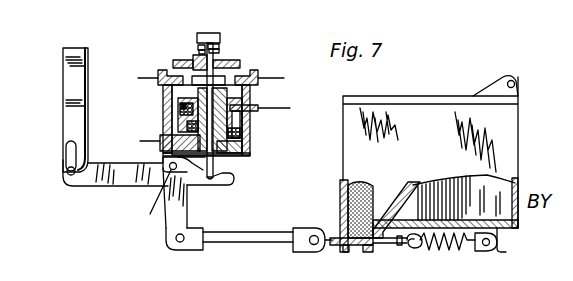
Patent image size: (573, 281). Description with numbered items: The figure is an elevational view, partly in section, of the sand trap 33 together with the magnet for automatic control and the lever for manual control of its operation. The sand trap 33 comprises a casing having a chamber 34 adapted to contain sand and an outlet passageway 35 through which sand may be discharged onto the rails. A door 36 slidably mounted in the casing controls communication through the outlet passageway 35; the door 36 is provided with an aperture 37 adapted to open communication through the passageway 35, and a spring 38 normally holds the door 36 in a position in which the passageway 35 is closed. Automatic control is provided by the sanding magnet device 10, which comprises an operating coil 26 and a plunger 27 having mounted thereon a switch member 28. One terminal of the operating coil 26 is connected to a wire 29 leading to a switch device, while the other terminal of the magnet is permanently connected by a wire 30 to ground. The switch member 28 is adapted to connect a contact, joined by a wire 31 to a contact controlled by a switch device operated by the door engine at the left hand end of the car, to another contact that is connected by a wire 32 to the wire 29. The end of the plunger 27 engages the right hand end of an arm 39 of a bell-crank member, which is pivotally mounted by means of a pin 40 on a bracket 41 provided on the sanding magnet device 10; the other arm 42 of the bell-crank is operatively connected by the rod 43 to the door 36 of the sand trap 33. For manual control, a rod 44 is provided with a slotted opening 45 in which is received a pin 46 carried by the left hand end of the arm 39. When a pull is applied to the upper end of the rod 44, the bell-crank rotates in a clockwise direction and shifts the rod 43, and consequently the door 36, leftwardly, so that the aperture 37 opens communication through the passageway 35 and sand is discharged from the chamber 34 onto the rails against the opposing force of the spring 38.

The sanding magnet device 10 is at (259, 131).
The operating coil 26 is at (182, 112).
The plunger 27 is at (211, 158).
The switch member 28 is at (197, 60).
The wire 29 is at (140, 141).
The wire 30 is at (290, 108).
The wire 31 is at (284, 78).
The wire 32 is at (138, 78).
The sand trap 33 is at (527, 137).
The chamber 34 is at (352, 186).
The outlet passageway 35 is at (355, 214).
The door 36 is at (363, 247).
The aperture 37 is at (380, 248).
The spring 38 is at (442, 251).
The arm 39 is at (118, 188).
The pin 40 is at (155, 206).
The bracket 41 is at (228, 158).
The arm 42 is at (182, 206).
The rod 43 is at (243, 244).
The rod 44 is at (74, 78).
The slotted opening 45 is at (68, 150).
The pin 46 is at (67, 172).